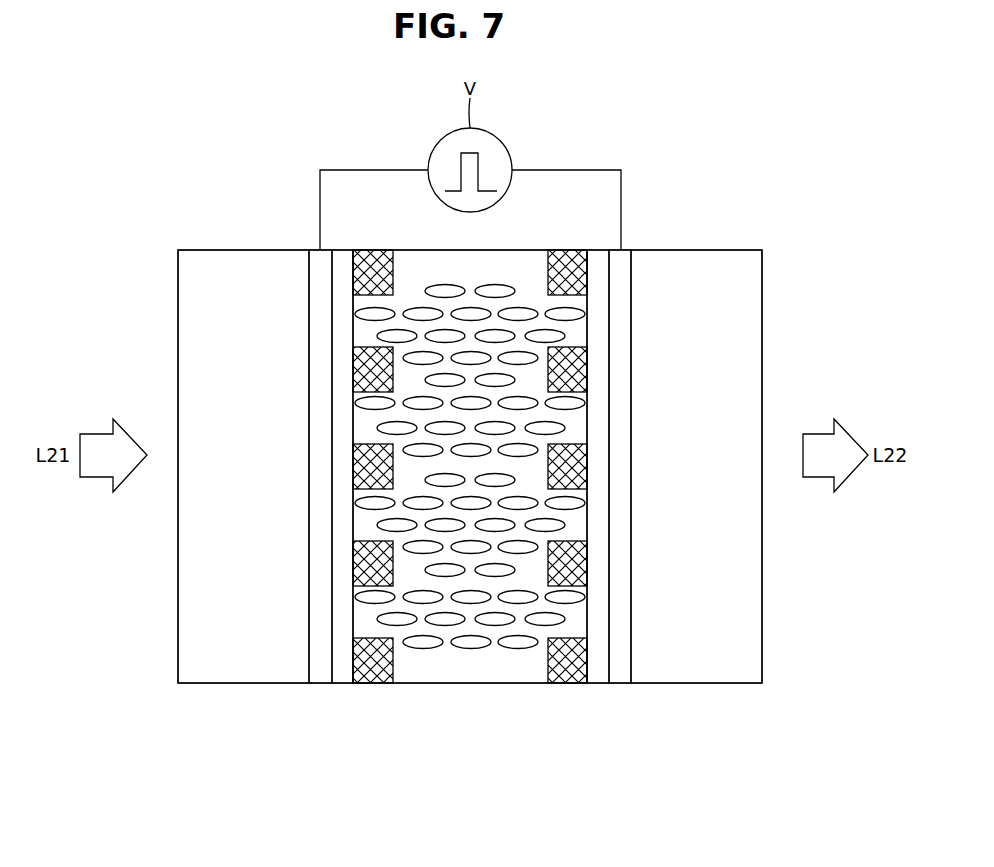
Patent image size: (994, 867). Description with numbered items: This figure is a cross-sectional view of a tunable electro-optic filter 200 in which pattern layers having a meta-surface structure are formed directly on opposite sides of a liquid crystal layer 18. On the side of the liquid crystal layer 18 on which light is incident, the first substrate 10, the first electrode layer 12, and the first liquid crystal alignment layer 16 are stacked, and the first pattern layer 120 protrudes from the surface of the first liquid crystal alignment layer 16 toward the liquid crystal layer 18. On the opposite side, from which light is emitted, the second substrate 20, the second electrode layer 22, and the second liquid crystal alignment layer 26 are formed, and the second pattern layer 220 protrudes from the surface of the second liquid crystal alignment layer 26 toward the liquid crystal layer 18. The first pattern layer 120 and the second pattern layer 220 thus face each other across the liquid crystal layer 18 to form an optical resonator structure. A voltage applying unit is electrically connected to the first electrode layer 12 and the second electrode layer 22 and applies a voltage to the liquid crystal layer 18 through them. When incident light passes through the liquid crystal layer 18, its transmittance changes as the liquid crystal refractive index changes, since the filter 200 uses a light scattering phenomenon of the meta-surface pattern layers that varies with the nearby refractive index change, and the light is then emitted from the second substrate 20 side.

The tunable electro-optic filter 200 is at (772, 210).
The first substrate 10 is at (231, 675).
The first electrode layer 12 is at (320, 677).
The first liquid crystal alignment layer 16 is at (342, 677).
The first pattern layer 120 is at (378, 680).
The liquid crystal layer 18 is at (464, 673).
The second pattern layer 220 is at (558, 680).
The second liquid crystal alignment layer 26 is at (598, 675).
The second electrode layer 22 is at (620, 675).
The second substrate 20 is at (722, 675).